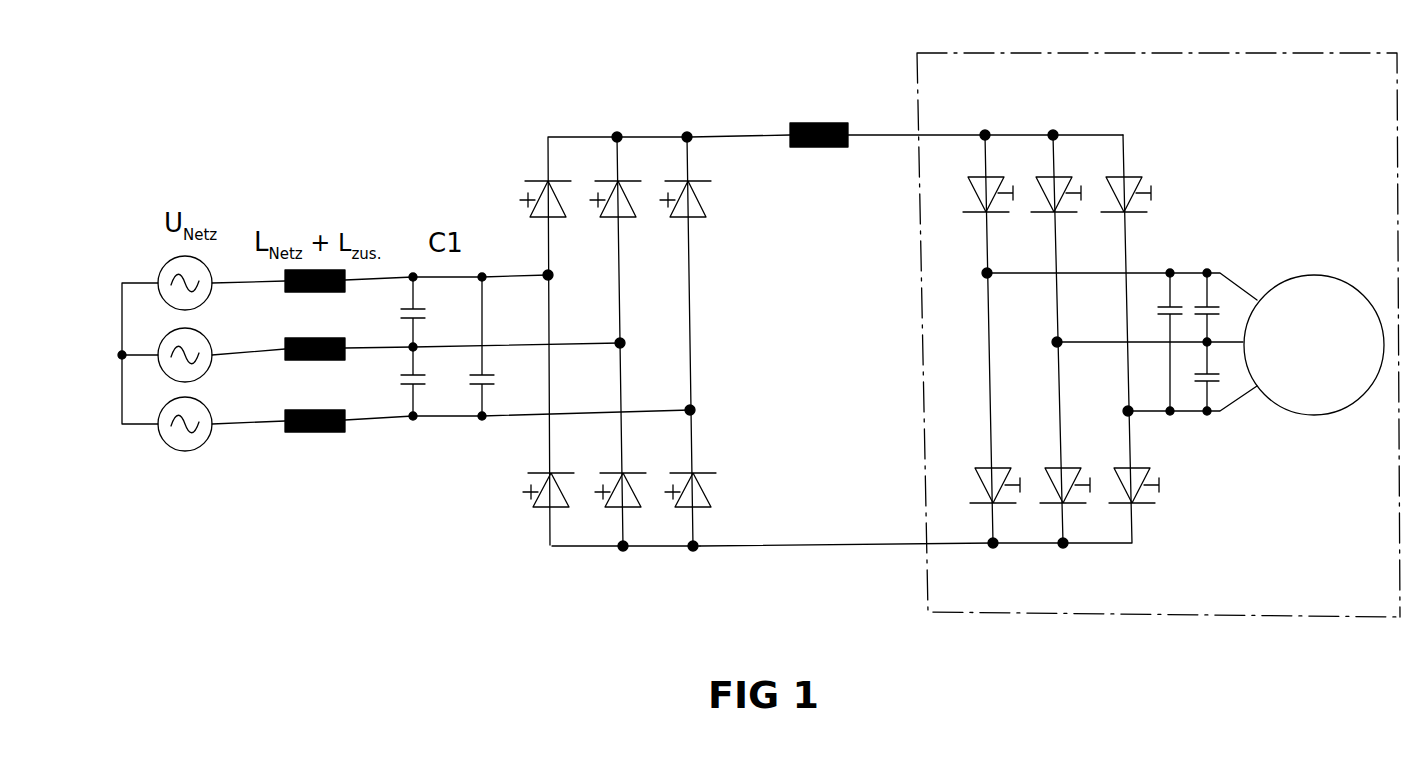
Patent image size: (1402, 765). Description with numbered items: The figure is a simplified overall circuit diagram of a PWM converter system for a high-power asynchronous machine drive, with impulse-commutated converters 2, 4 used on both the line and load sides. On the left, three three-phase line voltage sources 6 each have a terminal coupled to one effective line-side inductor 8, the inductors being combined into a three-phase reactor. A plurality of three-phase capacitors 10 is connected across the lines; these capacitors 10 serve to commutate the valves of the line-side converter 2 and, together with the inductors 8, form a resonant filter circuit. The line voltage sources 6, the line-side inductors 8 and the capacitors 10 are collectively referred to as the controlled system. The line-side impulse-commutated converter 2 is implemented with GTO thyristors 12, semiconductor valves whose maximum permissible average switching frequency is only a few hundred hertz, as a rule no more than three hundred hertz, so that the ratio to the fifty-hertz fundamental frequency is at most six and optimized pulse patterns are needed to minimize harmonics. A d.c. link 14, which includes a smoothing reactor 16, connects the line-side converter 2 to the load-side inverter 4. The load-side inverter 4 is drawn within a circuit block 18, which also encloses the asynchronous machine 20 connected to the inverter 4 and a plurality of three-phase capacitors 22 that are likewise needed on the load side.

The line-side impulse-commutated converter 2 is at (662, 346).
The load-side inverter 4 is at (1029, 426).
The three-phase line voltage source 6 is at (204, 338).
The line-side inductor 8 is at (312, 293).
The capacitor 10 is at (425, 315).
The GTO thyristor 12 is at (565, 205).
The d.c. link 14 is at (730, 137).
The smoothing reactor 16 is at (826, 122).
The circuit block 18 is at (1238, 52).
The asynchronous machine 20 is at (1317, 415).
The three-phase capacitor 22 is at (1180, 357).